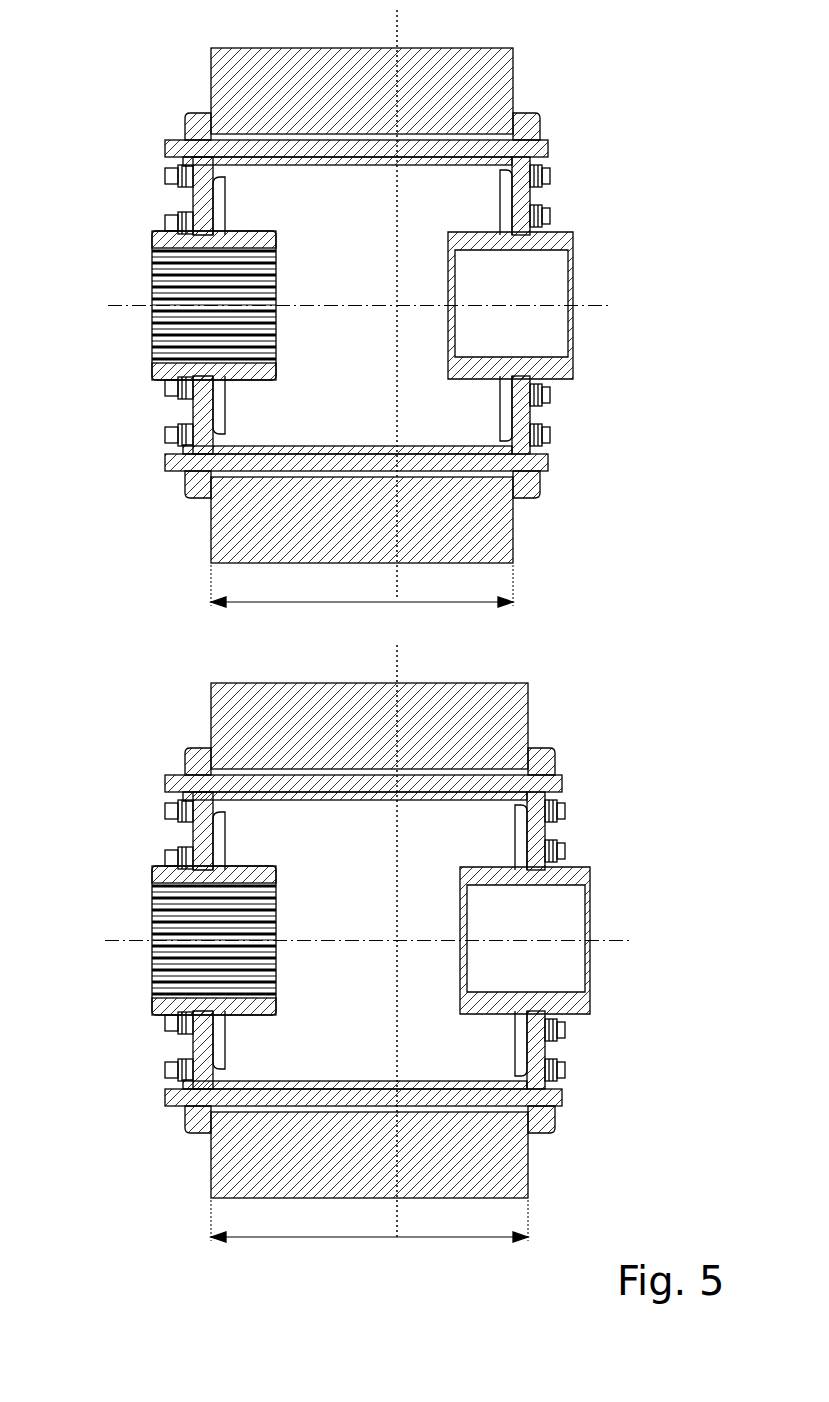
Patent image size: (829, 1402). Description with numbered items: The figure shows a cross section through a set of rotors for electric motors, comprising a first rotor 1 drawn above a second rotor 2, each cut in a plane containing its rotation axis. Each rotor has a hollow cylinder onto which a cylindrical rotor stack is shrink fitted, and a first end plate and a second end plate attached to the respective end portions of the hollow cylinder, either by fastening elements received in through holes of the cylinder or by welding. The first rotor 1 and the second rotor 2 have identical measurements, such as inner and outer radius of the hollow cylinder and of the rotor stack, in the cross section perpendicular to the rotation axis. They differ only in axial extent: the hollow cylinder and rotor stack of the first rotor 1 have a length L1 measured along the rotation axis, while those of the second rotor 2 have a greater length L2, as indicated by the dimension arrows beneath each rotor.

The first rotor 1 is at (346, 308).
The second rotor 2 is at (356, 943).
The length L1 is at (308, 602).
The length L2 is at (308, 1237).